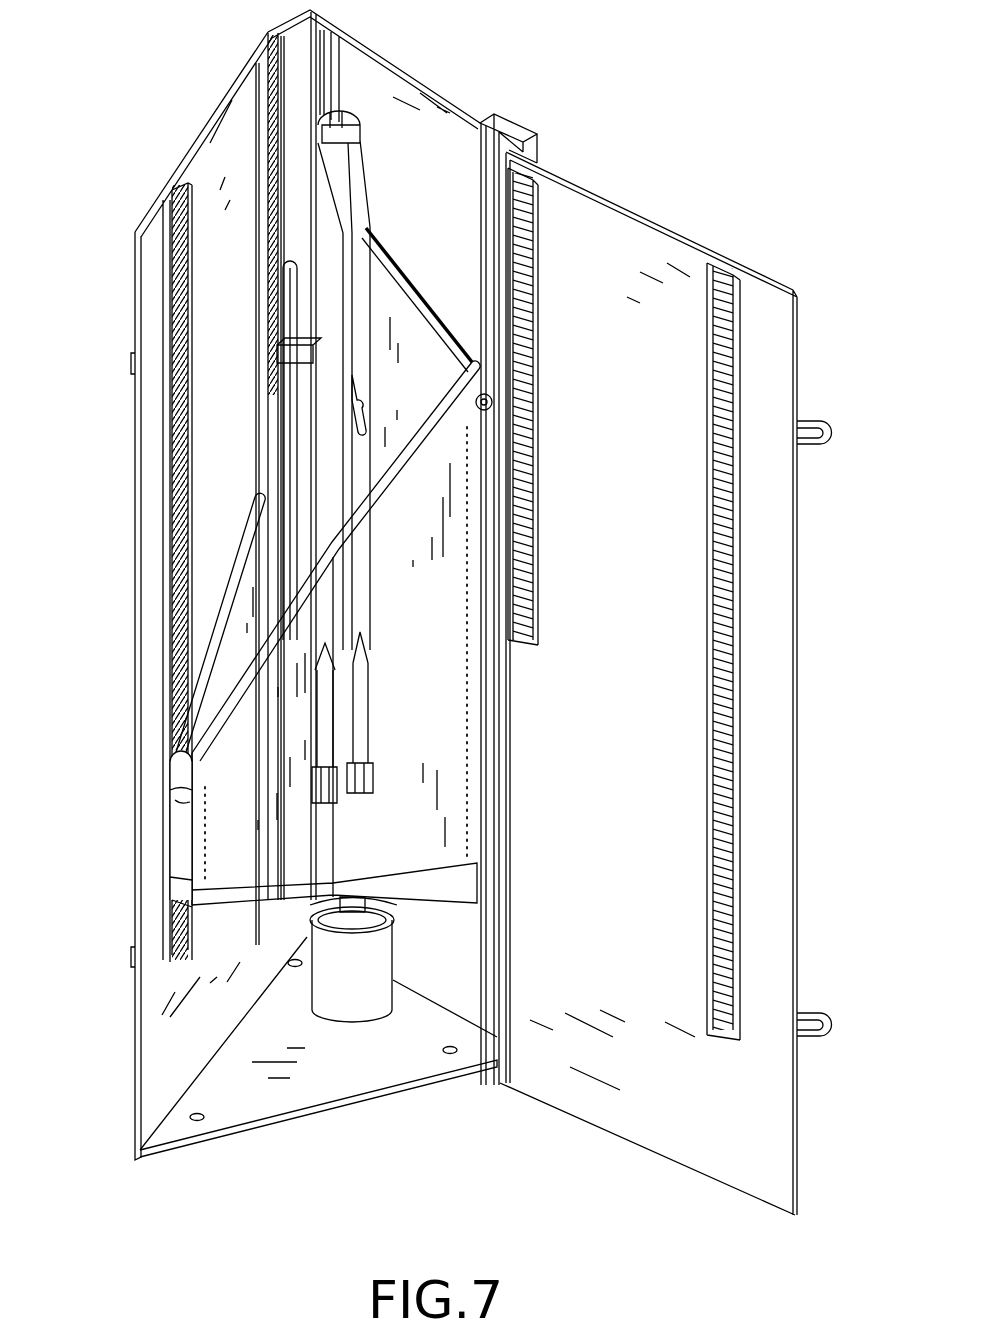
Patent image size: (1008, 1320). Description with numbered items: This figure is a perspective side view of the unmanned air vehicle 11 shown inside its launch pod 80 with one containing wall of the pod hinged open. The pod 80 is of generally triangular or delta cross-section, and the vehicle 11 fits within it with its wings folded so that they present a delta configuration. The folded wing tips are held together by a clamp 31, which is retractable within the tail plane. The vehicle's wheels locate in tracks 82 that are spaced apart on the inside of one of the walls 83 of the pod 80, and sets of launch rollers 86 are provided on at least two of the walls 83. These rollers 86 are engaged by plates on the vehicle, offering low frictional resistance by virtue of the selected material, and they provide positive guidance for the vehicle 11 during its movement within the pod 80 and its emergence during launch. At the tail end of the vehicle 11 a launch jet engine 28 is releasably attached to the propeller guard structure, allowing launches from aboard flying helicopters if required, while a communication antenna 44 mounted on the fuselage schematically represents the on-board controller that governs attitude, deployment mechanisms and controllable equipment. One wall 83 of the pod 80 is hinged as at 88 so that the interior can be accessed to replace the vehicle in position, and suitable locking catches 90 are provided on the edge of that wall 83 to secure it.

The unmanned air vehicle 11 is at (400, 234).
The launch jet engine 28 is at (350, 1002).
The clamp 31 is at (173, 800).
The communication antenna 44 is at (330, 185).
The pod 80 is at (136, 253).
The tracks 82 is at (340, 50).
The walls 83 is at (605, 863).
The launch rollers 86 is at (200, 190).
The hinge 88 is at (498, 1087).
The locking catches 90 is at (830, 433).